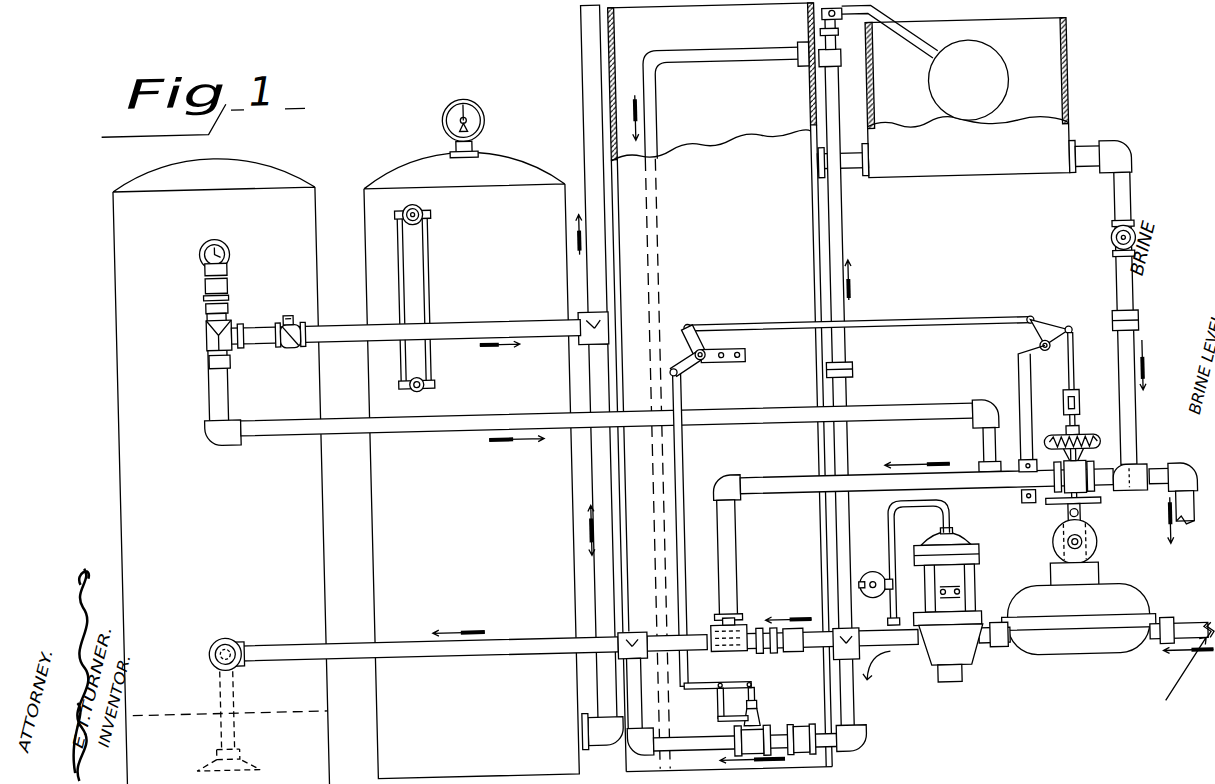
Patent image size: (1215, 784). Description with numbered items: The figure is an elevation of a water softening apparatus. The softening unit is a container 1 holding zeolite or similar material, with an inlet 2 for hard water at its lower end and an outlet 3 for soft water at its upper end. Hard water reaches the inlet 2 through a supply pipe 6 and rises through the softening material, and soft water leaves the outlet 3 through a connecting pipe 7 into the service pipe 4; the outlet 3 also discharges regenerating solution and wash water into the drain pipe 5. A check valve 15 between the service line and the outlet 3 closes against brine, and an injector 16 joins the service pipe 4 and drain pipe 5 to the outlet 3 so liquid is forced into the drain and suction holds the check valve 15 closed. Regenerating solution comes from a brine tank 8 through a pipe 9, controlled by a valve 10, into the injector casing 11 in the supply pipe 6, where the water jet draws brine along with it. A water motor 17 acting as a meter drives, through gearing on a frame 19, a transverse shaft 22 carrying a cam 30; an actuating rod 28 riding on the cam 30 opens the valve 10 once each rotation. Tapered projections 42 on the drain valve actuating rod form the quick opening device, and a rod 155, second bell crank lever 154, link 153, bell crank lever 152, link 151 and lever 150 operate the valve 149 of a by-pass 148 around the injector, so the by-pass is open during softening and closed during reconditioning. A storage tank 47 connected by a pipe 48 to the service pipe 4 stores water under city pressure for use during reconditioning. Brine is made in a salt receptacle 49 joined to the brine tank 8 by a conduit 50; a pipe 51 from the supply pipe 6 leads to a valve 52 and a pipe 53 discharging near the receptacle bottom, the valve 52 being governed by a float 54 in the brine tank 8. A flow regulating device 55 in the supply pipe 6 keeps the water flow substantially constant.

The container 1 is at (141, 271).
The inlet 2 is at (226, 640).
The outlet 3 is at (232, 243).
The service pipe 4 is at (597, 9).
The drain pipe 5 is at (537, 427).
The hard water supply pipe 6 is at (815, 653).
The connecting pipe 7 is at (470, 325).
The brine tank 8 is at (1078, 110).
The pipe 9 is at (819, 490).
The valve 10 is at (1093, 494).
The casing 11 is at (730, 634).
The check valve 15 is at (293, 336).
The injector 16 is at (208, 325).
The water motor 17 is at (1078, 621).
The frame 19 is at (1048, 513).
The transverse shaft 22 is at (1080, 556).
The actuating rod 28 is at (1063, 442).
The cam 30 is at (1094, 548).
The tapered projections 42 is at (1078, 448).
The storage tank 47 is at (470, 438).
The pipe 48 is at (600, 590).
The salt receptacle 49 is at (720, 387).
The conduit 50 is at (865, 172).
The pipe 51 is at (848, 254).
The valve 52 is at (850, 58).
The pipe 53 is at (660, 131).
The float 54 is at (969, 80).
The flow regulating device 55 is at (956, 660).
The by-pass 148 is at (858, 744).
The valve 149 is at (751, 737).
The lever 150 is at (693, 688).
The link 151 is at (682, 472).
The bell crank lever 152 is at (700, 365).
The link 153 is at (982, 331).
The second bell crank lever 154 is at (1032, 342).
The rod 155 is at (1073, 399).